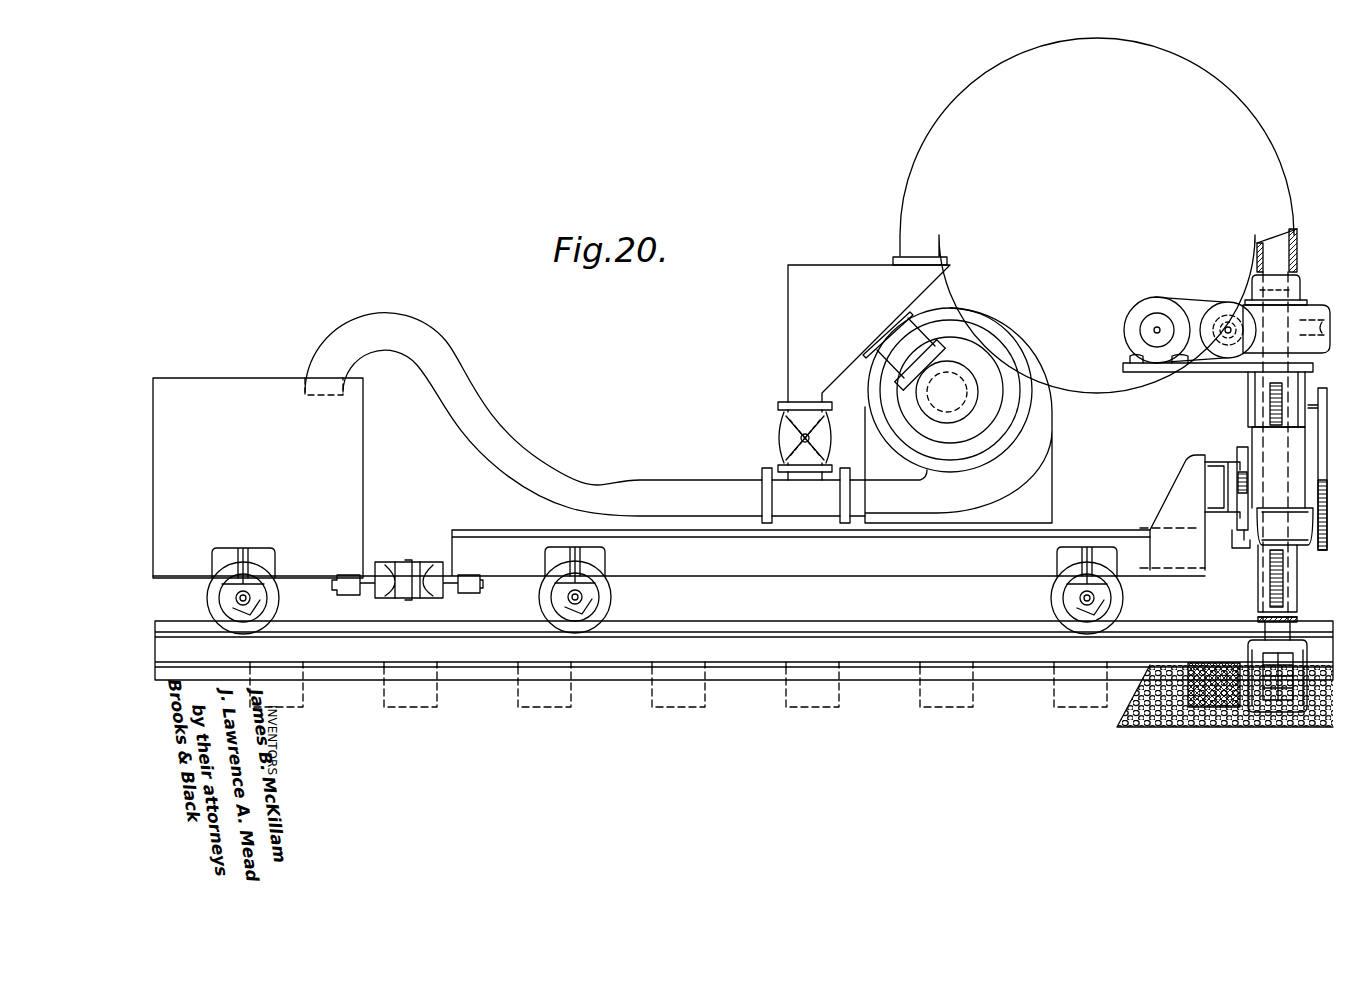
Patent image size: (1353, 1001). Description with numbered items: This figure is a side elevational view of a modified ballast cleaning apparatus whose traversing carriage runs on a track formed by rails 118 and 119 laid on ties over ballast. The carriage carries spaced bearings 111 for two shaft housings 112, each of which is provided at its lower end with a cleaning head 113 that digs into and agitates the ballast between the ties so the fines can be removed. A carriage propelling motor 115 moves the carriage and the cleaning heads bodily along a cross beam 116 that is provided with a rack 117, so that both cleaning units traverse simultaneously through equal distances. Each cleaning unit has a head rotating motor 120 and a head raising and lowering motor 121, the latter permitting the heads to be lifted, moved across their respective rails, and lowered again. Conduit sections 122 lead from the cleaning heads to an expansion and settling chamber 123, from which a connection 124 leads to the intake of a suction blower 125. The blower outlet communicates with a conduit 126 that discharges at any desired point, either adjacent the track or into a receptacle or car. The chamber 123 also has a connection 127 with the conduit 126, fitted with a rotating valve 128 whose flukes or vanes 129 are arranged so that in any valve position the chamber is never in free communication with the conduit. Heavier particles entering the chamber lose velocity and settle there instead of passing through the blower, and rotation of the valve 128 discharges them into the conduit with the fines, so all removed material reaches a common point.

The spaced bearings 111 is at (1250, 440).
The shaft housings 112 is at (1258, 582).
The cleaning head 113 is at (1248, 647).
The carriage propelling motor 115 is at (1248, 390).
The cross beam 116 is at (1240, 480).
The rack 117 is at (1228, 463).
The rail 118 is at (943, 621).
The rail 119 is at (1177, 630).
The head rotating motor 120 is at (1147, 283).
The head raising and lowering motor 121 is at (1314, 560).
The conduit sections 122 is at (1232, 122).
The expansion and settling chamber 123 is at (812, 318).
The connection 124 is at (882, 350).
The suction blower 125 is at (968, 343).
The conduit 126 is at (687, 493).
The connection 127 is at (807, 498).
The rotating valve 128 is at (781, 441).
The flukes or vanes 129 is at (782, 445).